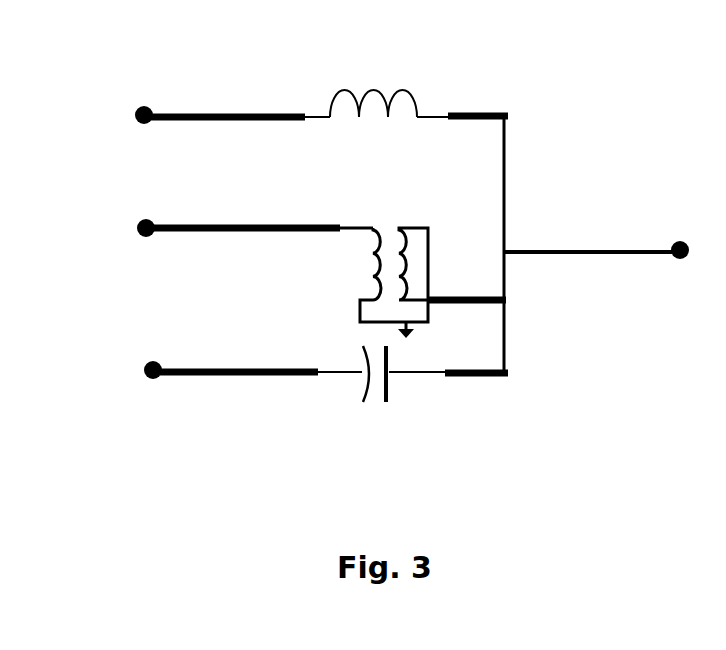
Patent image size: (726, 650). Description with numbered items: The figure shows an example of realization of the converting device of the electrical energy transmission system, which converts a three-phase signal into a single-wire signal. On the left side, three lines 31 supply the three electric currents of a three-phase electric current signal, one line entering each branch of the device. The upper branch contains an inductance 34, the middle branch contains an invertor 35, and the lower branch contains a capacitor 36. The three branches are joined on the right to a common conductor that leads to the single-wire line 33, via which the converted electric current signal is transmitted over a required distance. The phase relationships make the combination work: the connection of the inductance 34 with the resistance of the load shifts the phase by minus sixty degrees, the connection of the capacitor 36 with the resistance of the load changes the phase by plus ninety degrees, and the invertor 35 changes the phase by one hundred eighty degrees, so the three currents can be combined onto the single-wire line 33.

The lines 31 is at (148, 141).
The single-wire line 33 is at (680, 280).
The inductance 34 is at (372, 70).
The invertor 35 is at (352, 276).
The capacitor 36 is at (328, 400).